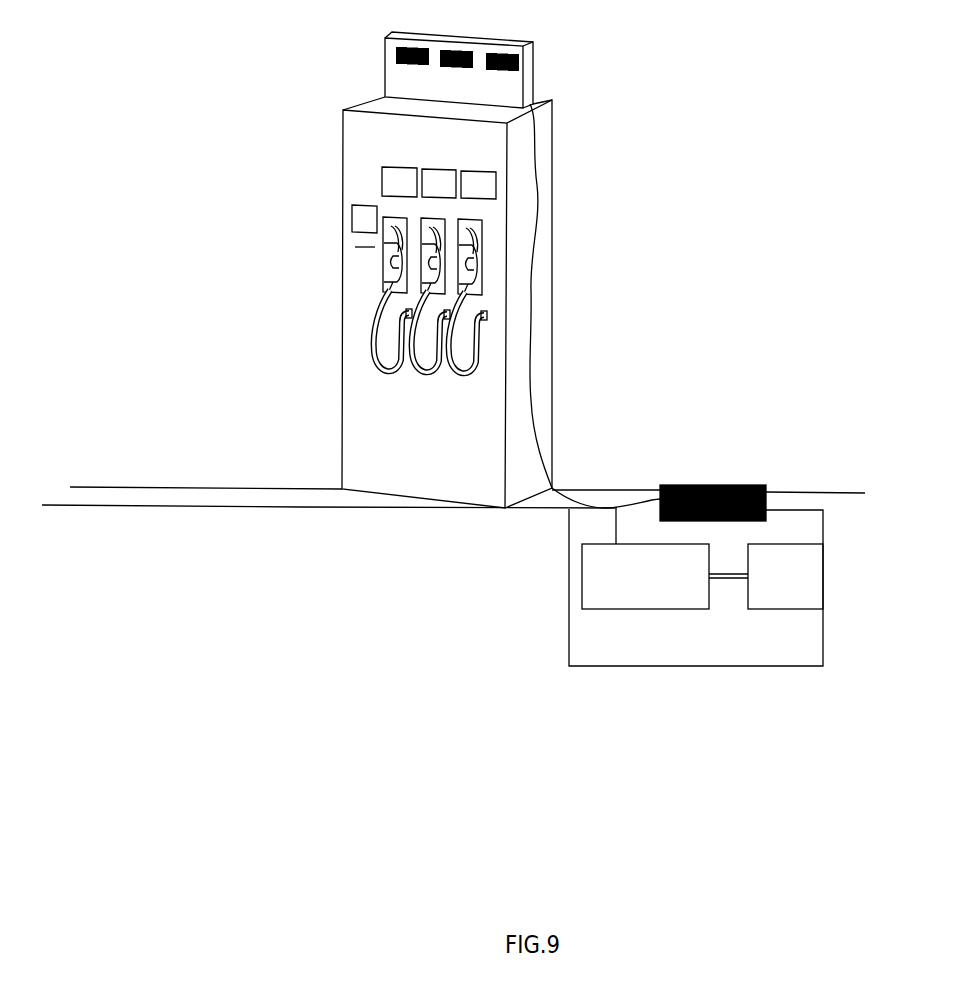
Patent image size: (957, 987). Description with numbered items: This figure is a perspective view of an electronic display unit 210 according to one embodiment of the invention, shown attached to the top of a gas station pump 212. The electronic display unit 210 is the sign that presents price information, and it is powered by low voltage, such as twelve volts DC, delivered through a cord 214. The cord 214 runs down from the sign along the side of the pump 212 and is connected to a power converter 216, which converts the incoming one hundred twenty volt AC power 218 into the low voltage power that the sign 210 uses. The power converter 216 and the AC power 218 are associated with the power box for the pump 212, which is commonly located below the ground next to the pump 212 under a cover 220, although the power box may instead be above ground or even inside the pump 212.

The electronic display unit 210 is at (531, 43).
The gas station pump 212 is at (355, 174).
The cord 214 is at (531, 340).
The power converter 216 is at (590, 610).
The 120 VAC power 218 is at (808, 610).
The cover 220 is at (727, 485).